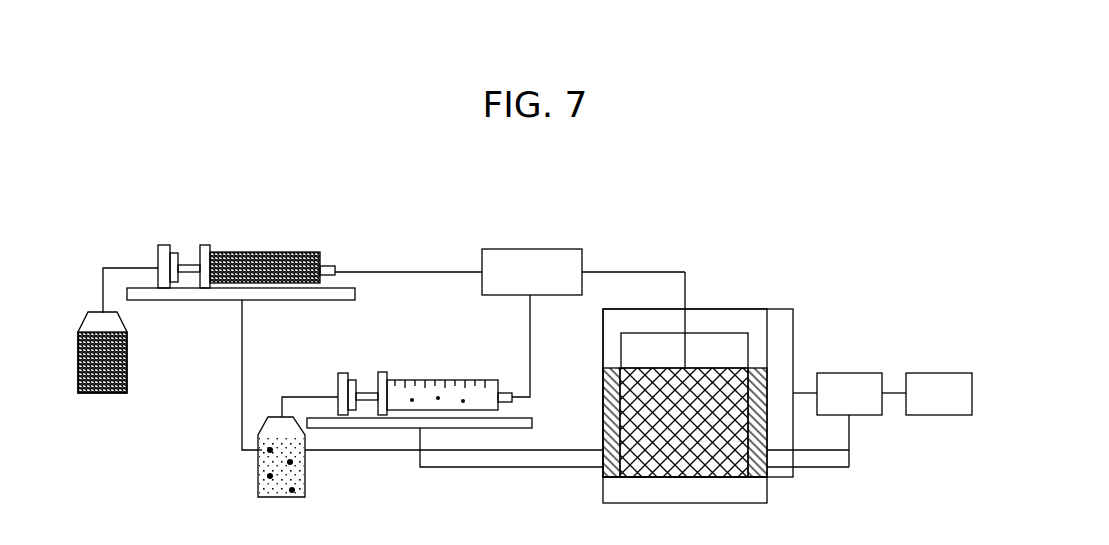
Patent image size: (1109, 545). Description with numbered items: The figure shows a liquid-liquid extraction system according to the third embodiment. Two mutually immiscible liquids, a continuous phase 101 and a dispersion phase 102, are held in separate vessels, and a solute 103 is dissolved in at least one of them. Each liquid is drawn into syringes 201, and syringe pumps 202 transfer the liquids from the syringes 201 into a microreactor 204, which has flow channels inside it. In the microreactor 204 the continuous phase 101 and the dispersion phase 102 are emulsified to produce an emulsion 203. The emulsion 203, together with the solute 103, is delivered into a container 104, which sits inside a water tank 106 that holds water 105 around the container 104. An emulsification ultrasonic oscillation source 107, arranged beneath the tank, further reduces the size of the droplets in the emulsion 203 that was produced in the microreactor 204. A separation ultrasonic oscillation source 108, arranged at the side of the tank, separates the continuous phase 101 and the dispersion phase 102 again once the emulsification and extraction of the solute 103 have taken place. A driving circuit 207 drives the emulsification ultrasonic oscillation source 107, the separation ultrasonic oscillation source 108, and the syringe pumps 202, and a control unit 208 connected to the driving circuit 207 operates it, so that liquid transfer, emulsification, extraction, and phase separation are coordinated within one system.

The continuous phase 101 is at (257, 475).
The dispersion phase 102 is at (127, 342).
The solute 103 is at (270, 448).
The container 104 is at (697, 330).
The water 105 is at (757, 366).
The water tank 106 is at (730, 309).
The emulsification ultrasonic oscillation source 107 is at (767, 495).
The separation ultrasonic oscillation source 108 is at (787, 309).
The syringes 201 is at (267, 252).
The syringe pumps 202 is at (205, 245).
The emulsion 203 is at (685, 362).
The microreactor 204 is at (532, 249).
The driving circuit 207 is at (848, 373).
The control unit 208 is at (940, 373).